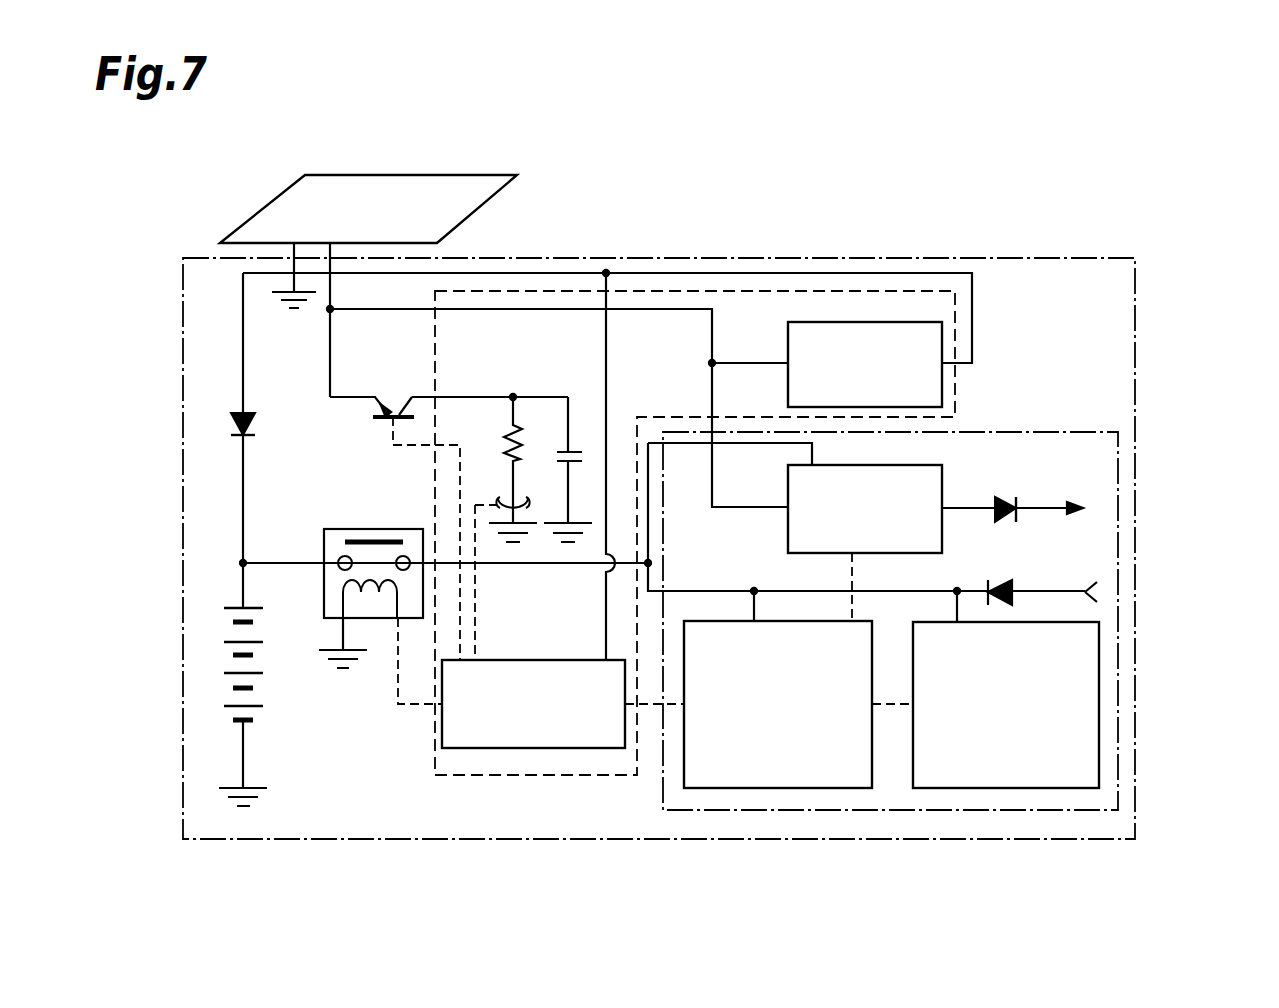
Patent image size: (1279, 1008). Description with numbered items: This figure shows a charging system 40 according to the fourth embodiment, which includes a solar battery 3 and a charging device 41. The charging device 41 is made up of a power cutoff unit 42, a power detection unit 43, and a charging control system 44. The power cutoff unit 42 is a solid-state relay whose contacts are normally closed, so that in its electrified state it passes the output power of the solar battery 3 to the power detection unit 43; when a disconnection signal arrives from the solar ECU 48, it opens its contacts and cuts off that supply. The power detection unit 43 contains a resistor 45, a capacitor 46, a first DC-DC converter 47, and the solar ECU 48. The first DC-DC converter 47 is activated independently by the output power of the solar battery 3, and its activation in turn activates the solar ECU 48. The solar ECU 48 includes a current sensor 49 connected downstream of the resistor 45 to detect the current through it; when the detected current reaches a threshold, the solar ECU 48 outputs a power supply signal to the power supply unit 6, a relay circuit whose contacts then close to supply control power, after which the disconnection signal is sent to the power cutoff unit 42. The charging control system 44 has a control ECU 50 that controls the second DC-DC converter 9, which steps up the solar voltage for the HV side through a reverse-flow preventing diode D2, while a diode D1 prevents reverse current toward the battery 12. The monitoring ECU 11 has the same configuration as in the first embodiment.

The solar battery 3 is at (385, 175).
The power supply unit 6 is at (365, 529).
The second DC-DC converter 9 is at (942, 484).
The monitoring ECU 11 is at (1010, 788).
The battery 12 is at (232, 608).
The charging system 40 is at (1186, 142).
The charging device 41 is at (1066, 258).
The power cutoff unit 42 is at (388, 400).
The power detection unit 43 is at (956, 378).
The charging control system 44 is at (1086, 432).
The resistor 45 is at (505, 446).
The capacitor 46 is at (572, 450).
The first DC-DC converter 47 is at (788, 350).
The solar ECU 48 is at (545, 660).
The current sensor 49 is at (531, 500).
The control ECU 50 is at (777, 788).
The diode D1 is at (258, 428).
The diode D2 is at (1005, 497).